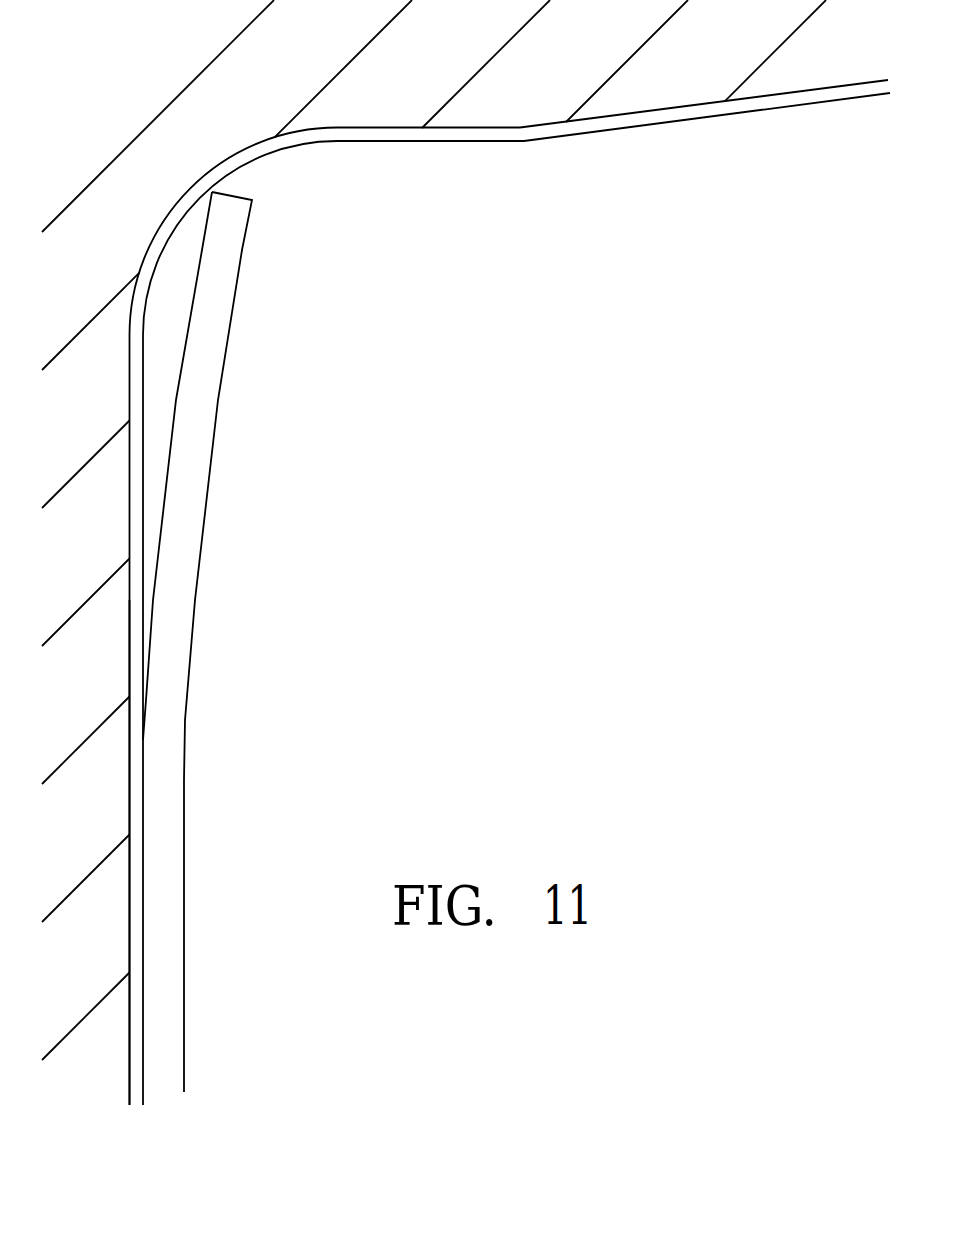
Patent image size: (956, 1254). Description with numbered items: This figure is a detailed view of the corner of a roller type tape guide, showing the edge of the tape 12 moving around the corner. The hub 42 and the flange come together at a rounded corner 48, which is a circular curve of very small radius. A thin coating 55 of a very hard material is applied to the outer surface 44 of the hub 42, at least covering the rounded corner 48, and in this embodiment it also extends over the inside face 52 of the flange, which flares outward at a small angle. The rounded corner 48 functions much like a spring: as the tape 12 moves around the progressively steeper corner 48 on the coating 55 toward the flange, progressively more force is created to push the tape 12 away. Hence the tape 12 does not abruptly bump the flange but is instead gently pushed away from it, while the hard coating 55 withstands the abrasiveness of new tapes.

The tape 12 is at (210, 348).
The hub 42 is at (84, 836).
The outer surface 44 is at (129, 953).
The rounded corner 48 is at (250, 163).
The inside face 52 is at (700, 108).
The coating 55 is at (475, 577).